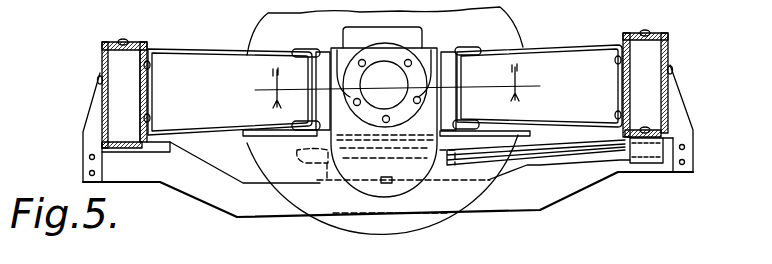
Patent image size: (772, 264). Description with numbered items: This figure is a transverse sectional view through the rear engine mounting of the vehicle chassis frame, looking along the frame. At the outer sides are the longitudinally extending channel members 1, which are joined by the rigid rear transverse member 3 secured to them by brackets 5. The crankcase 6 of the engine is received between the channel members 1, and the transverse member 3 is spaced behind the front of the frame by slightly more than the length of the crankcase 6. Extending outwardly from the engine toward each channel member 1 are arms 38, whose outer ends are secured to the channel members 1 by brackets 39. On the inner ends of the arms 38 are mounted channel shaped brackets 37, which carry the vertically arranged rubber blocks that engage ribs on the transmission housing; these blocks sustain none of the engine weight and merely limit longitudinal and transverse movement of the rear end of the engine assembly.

The channel member 1 is at (102, 52).
The rear transverse member 3 is at (205, 203).
The bracket 5 is at (92, 131).
The crankcase 6 is at (396, 86).
The bracket 37 is at (320, 65).
The arm 38 is at (176, 50).
The bracket 39 is at (141, 104).